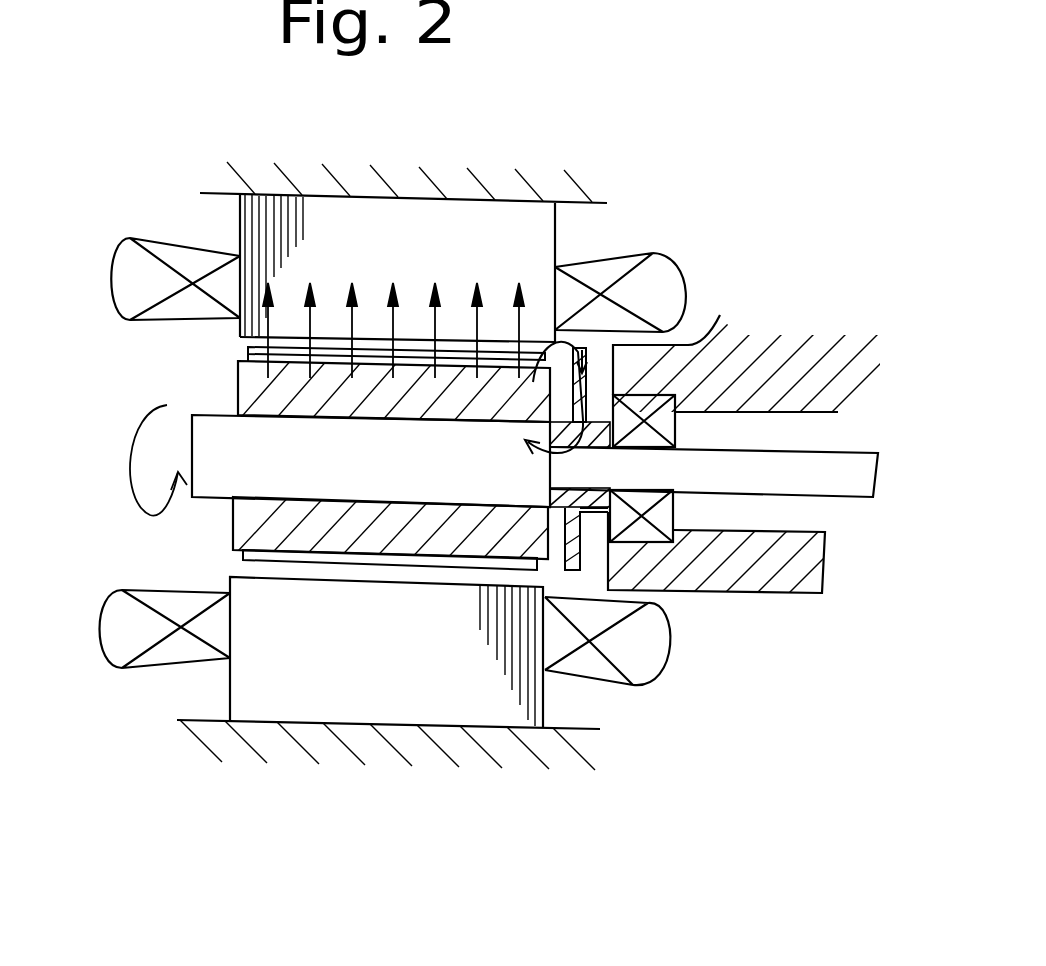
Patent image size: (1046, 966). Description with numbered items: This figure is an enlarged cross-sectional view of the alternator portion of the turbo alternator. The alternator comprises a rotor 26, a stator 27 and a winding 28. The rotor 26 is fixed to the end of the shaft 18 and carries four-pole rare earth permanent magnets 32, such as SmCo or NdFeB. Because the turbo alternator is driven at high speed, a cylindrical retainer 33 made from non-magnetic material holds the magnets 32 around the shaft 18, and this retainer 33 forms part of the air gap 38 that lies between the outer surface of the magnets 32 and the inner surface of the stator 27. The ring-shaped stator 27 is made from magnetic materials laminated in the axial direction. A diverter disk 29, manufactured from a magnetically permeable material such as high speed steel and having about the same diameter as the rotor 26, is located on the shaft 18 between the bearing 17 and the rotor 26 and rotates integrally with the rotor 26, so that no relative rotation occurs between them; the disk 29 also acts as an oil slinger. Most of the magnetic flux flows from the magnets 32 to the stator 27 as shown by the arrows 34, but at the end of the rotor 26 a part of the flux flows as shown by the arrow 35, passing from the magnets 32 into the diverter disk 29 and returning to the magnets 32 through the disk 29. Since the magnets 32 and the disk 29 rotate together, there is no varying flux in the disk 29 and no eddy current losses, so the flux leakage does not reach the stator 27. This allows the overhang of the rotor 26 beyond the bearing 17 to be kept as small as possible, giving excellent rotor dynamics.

The bearing 17 is at (673, 512).
The shaft 18 is at (855, 468).
The rotor 26 is at (221, 524).
The stator 27 is at (520, 706).
The winding 28 is at (677, 267).
The diverter disk 29 is at (585, 558).
The permanent magnets 32 is at (250, 388).
The cylindrical retainer 33 is at (307, 562).
The arrows 34 is at (245, 345).
The arrow 35 is at (557, 328).
The air gap 38 is at (248, 570).